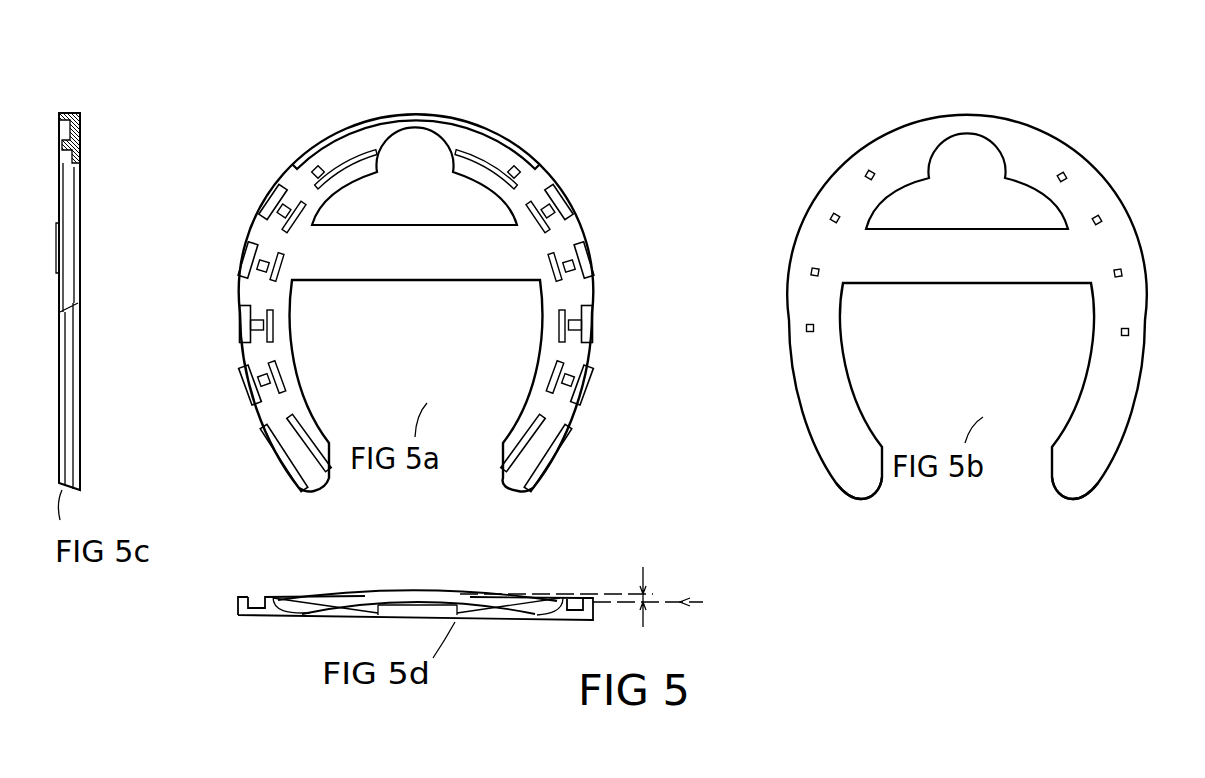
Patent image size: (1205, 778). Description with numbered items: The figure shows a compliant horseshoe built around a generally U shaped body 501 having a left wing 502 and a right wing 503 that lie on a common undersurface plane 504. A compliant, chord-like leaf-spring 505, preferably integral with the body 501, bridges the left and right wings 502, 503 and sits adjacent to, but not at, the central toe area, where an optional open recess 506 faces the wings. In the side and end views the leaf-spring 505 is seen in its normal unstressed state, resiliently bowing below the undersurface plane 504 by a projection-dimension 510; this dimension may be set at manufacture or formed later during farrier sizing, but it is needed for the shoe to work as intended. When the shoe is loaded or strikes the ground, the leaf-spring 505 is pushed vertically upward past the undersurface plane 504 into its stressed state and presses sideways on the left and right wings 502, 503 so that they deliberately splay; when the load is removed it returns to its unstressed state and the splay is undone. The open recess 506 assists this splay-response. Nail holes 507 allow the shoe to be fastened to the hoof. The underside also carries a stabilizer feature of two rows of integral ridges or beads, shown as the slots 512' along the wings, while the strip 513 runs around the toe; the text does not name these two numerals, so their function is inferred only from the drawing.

In FIG. 5A, the generally U shaped body 501 is at (545, 170).
In FIG. 5B, the generally U shaped body 501 is at (815, 212).
In FIG. 5B, the left wing 502 is at (848, 462).
In FIG. 5B, the right wing 503 is at (1080, 478).
In FIG. 5D, the undersurface plane 504 is at (612, 616).
In FIG. 5B, the leaf-spring 505 is at (975, 267).
In FIG. 5D, the leaf-spring 505 is at (392, 598).
In FIG. 5B, the open recess 506 is at (967, 143).
In FIG. 5A, the nail holes 507 is at (563, 268).
In FIG. 5B, the nail holes 507 is at (815, 272).
In FIG. 5D, the projection-dimension 510 is at (640, 593).
In FIG. 5A, the traction slot 512' is at (388, 321).
In FIG. 5A, the toe wear strip 513 is at (413, 113).